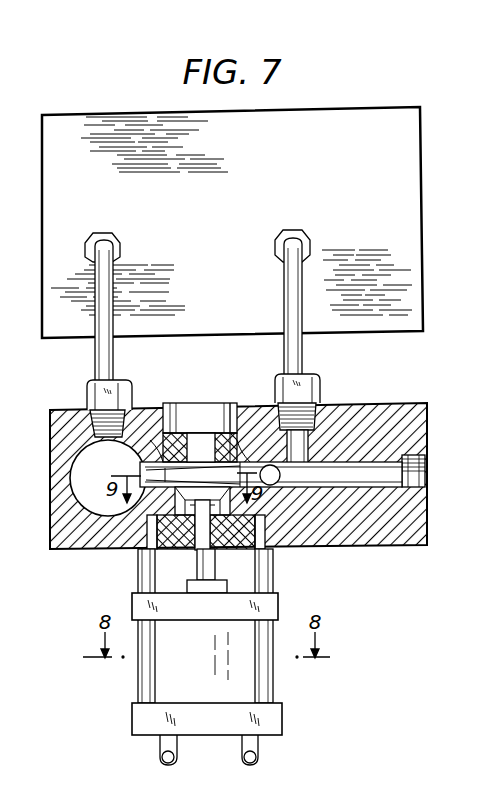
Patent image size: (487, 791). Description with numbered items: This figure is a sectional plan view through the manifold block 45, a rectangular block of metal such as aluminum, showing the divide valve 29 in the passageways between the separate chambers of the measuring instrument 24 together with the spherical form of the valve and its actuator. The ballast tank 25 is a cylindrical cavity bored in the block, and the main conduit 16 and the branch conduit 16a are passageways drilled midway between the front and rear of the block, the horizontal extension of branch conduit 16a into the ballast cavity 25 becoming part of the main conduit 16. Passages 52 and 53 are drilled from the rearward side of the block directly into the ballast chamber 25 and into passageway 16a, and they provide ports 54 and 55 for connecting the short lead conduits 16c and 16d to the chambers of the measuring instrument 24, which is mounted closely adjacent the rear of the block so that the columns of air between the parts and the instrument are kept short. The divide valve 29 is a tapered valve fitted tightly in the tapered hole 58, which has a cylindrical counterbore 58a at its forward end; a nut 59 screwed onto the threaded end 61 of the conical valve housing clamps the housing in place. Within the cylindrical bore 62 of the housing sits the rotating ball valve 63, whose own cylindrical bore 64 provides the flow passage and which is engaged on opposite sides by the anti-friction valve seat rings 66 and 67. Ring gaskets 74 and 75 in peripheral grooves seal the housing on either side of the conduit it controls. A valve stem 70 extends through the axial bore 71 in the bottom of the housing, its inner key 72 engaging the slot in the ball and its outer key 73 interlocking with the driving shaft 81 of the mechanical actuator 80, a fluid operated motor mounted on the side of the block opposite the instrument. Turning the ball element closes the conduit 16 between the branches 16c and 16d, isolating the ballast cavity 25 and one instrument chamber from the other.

The measuring instrument 24 is at (424, 279).
The main conduit 16 is at (282, 478).
The branch conduit 16a is at (383, 462).
The short lead conduit 16c is at (114, 352).
The short lead conduit 16d is at (303, 350).
The ballast tank 25 is at (72, 481).
The divide valve 29 is at (172, 409).
The manifold block 45 is at (428, 537).
The passage 52 is at (85, 412).
The passage 53 is at (307, 443).
The port 54 is at (102, 411).
The port 55 is at (308, 401).
The tapered hole 58 is at (229, 408).
The cylindrical counterbore 58a is at (258, 537).
The nut 59 is at (270, 575).
The threaded end 61 is at (141, 563).
The cylindrical bore 62 is at (158, 454).
The ball valve 63 is at (197, 410).
The cylindrical bore 64 is at (252, 462).
The valve seat ring 66 is at (177, 498).
The valve seat ring 67 is at (262, 512).
The valve stem 70 is at (220, 546).
The axial bore 71 is at (190, 549).
The key 72 is at (172, 478).
The key 73 is at (203, 567).
The ring gasket 74 is at (163, 410).
The ring gasket 75 is at (125, 549).
The mechanical actuator 80 is at (139, 693).
The driving shaft 81 is at (226, 572).